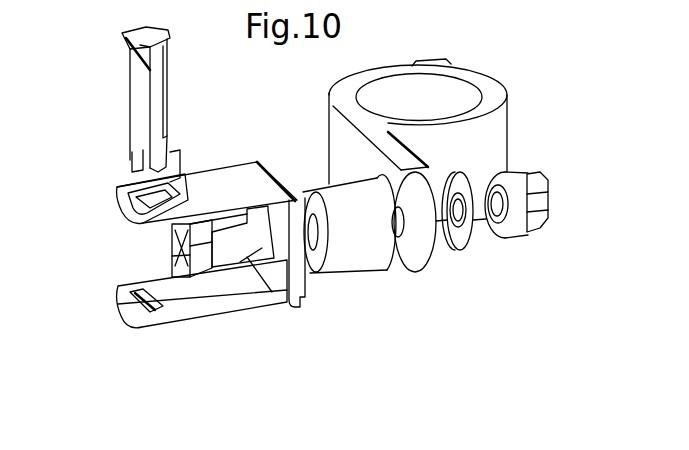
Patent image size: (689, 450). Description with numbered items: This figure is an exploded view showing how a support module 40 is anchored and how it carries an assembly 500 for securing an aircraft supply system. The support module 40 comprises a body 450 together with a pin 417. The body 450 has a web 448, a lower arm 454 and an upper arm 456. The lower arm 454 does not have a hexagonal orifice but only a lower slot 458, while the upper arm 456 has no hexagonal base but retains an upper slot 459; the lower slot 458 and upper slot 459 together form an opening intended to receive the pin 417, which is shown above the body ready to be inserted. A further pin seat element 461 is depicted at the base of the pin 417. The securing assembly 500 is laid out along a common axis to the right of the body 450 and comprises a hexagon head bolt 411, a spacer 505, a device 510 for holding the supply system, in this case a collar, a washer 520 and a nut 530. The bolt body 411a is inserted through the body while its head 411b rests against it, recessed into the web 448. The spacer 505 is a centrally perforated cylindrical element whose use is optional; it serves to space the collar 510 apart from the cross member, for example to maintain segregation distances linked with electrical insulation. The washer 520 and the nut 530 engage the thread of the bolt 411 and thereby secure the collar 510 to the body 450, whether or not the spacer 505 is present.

The support module 40 is at (133, 113).
The hexagon head bolt 411 is at (170, 247).
The bolt body 411a is at (241, 252).
The bolt head 411b is at (172, 254).
The pin 417 is at (108, 77).
The web 448 is at (283, 297).
The body 450 is at (167, 217).
The lower arm 454 is at (207, 307).
The upper arm 456 is at (230, 178).
The lower slot 458 is at (128, 304).
The upper slot 459 is at (120, 188).
The pin seat 461 is at (177, 163).
The securing assembly 500 is at (463, 159).
The spacer 505 is at (358, 243).
The collar 510 is at (492, 144).
The washer 520 is at (452, 245).
The nut 530 is at (549, 207).